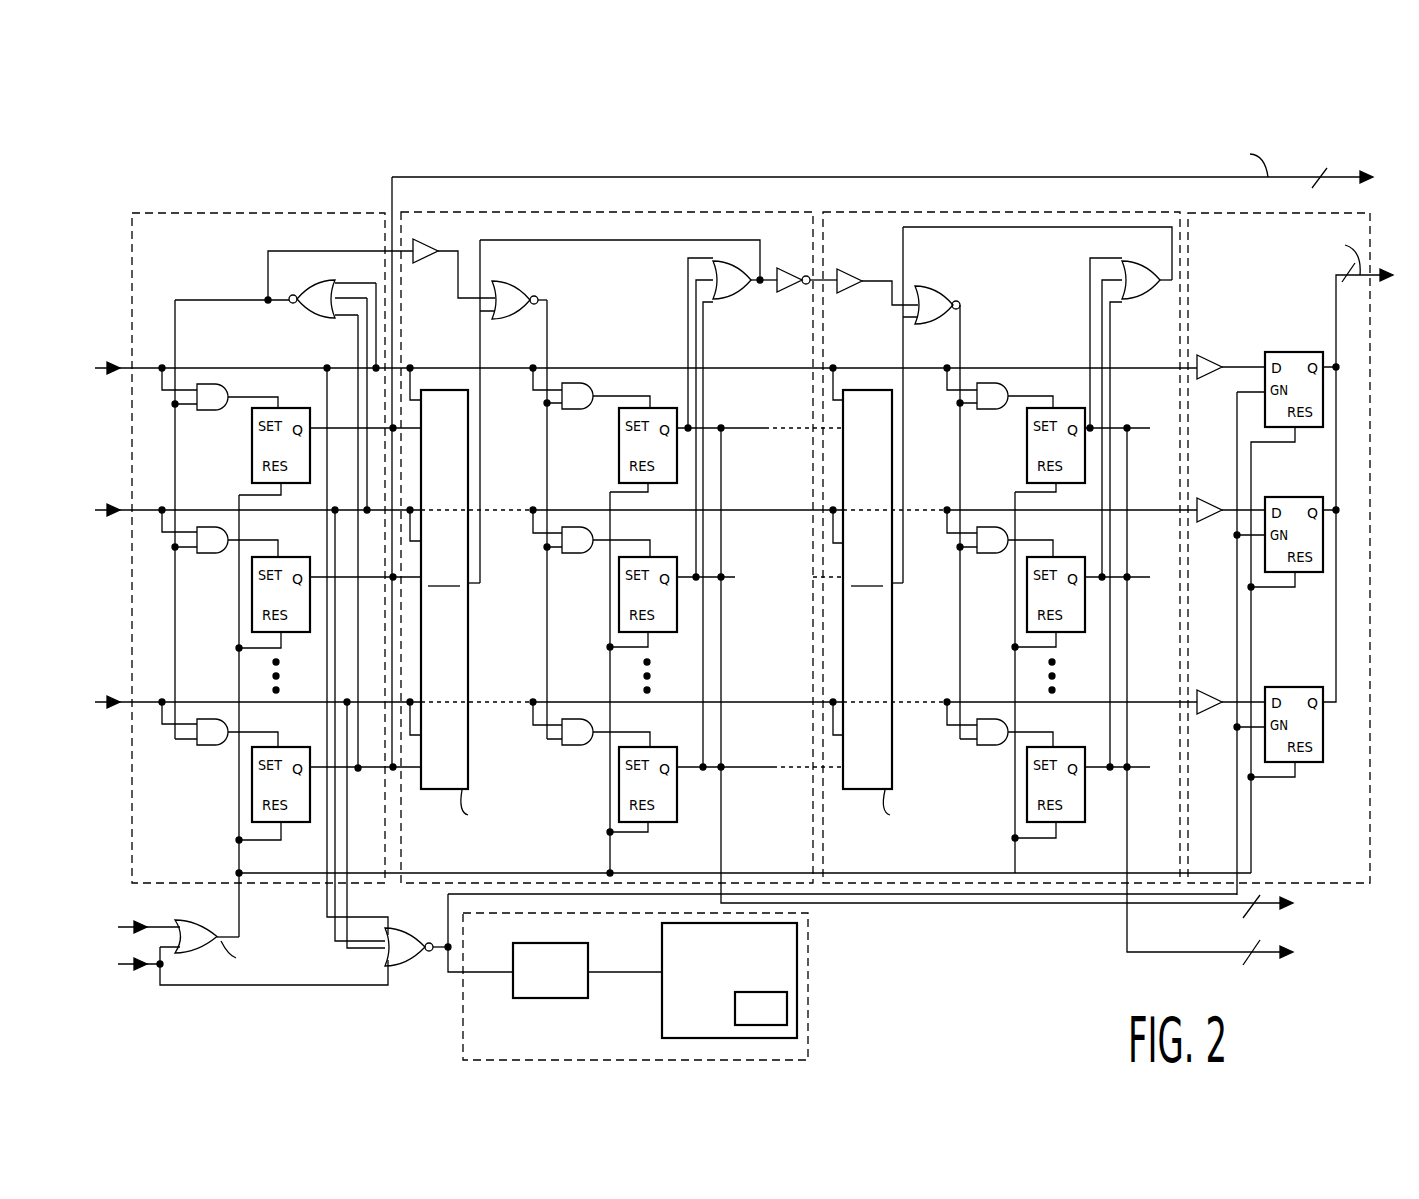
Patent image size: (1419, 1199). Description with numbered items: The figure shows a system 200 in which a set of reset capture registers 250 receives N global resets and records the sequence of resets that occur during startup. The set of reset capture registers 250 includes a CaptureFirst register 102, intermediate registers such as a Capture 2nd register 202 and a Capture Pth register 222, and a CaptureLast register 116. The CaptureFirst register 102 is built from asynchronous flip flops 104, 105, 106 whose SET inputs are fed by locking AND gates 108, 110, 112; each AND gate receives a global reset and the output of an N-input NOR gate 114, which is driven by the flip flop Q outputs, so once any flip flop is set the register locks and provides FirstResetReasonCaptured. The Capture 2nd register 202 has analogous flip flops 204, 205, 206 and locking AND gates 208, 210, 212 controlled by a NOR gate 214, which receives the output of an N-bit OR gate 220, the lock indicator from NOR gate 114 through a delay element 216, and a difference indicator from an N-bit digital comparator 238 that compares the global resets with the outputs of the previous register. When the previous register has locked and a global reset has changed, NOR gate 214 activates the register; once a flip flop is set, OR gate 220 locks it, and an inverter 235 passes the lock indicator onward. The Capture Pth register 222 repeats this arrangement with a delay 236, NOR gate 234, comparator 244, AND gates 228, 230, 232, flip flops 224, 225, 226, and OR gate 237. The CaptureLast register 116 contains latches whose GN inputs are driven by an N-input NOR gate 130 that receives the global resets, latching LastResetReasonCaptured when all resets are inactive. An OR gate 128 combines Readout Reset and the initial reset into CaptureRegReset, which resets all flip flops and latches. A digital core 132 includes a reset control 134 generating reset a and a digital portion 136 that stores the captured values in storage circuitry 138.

The system 200 is at (78, 176).
The CaptureFirst register 102 is at (170, 212).
The asynchronous flip flop 104 is at (252, 458).
The asynchronous flip flop 105 is at (305, 632).
The asynchronous flip flop 106 is at (305, 822).
The AND gate 108 is at (212, 410).
The AND gate 110 is at (216, 553).
The AND gate 112 is at (215, 745).
The N-input NOR gate 114 is at (313, 318).
The CaptureLast register 116 is at (1180, 212).
The OR gate 128 is at (190, 920).
The N-input NOR gate 130 is at (406, 966).
The digital core 132 is at (808, 985).
The reset control 134 is at (513, 962).
The digital portion 136 is at (662, 960).
The storage circuitry 138 is at (735, 1008).
The Capture 2nd register 202 is at (492, 212).
The asynchronous flip flop 204 is at (619, 455).
The asynchronous flip flop 205 is at (681, 632).
The asynchronous flip flop 206 is at (689, 822).
The AND gate 208 is at (576, 410).
The AND gate 210 is at (581, 553).
The AND gate 212 is at (581, 745).
The NOR gate 214 is at (510, 282).
The delay element 216 is at (428, 240).
The N-bit OR gate 220 is at (738, 300).
The Capture Pth register 222 is at (862, 212).
The asynchronous flip flop 224 is at (1027, 450).
The asynchronous flip flop 225 is at (1086, 632).
The asynchronous flip flop 226 is at (1081, 822).
The AND gate 228 is at (1010, 386).
The AND gate 230 is at (996, 555).
The AND gate 232 is at (991, 745).
The NOR gate 234 is at (931, 287).
The inverter 235 is at (791, 292).
The delay 236 is at (848, 269).
The OR gate 237 is at (1151, 302).
The N-bit digital comparator 238 is at (480, 619).
The N-bit digital comparator 244 is at (897, 619).
The set of reset capture registers 250 is at (1376, 455).